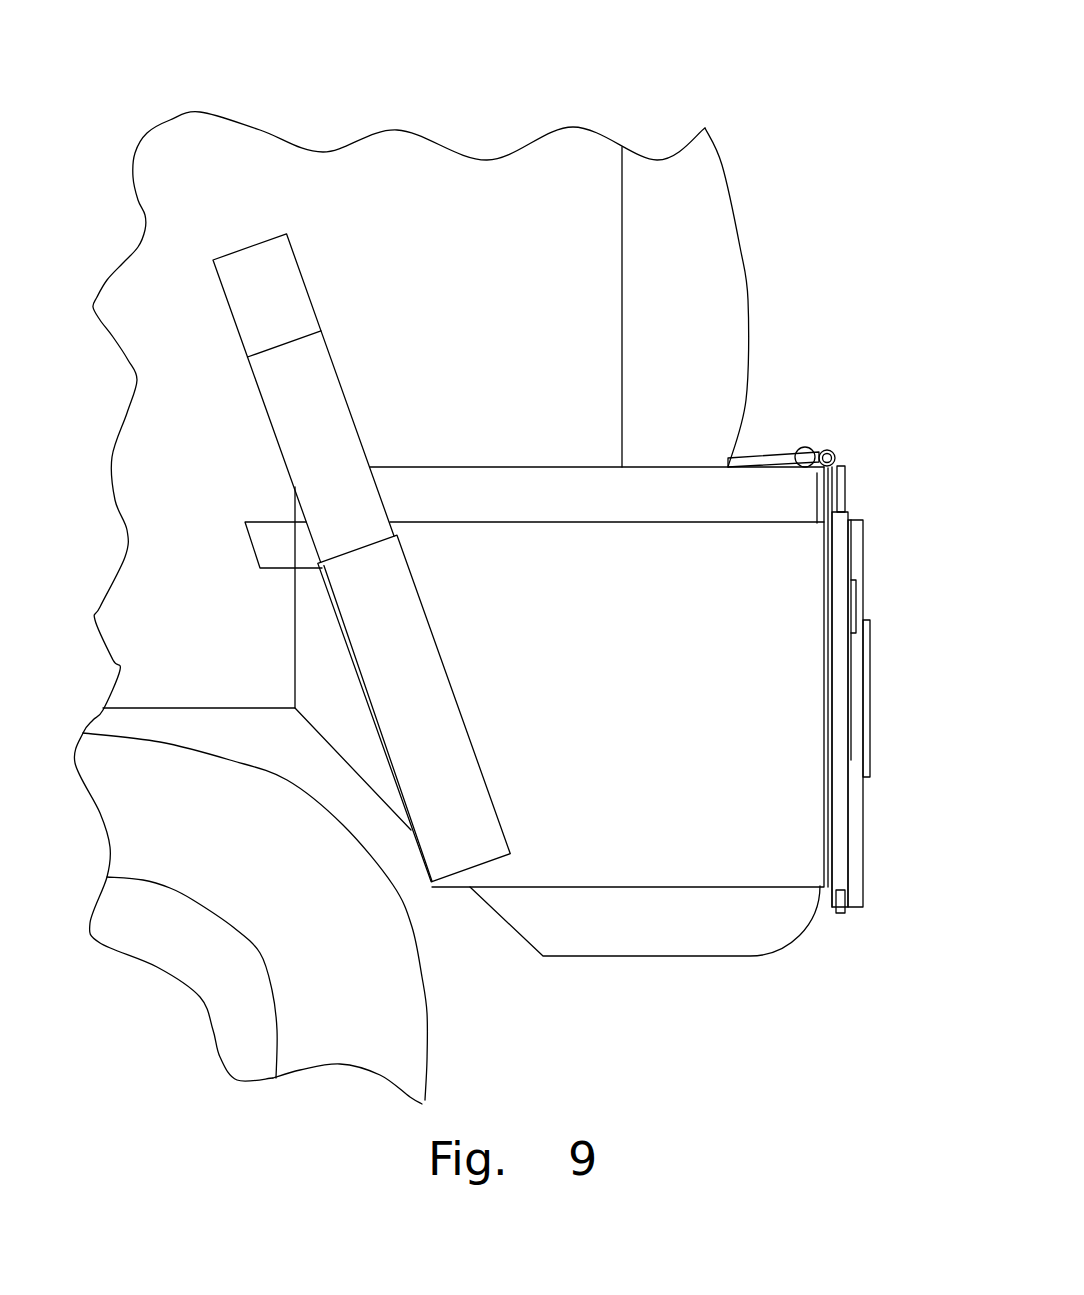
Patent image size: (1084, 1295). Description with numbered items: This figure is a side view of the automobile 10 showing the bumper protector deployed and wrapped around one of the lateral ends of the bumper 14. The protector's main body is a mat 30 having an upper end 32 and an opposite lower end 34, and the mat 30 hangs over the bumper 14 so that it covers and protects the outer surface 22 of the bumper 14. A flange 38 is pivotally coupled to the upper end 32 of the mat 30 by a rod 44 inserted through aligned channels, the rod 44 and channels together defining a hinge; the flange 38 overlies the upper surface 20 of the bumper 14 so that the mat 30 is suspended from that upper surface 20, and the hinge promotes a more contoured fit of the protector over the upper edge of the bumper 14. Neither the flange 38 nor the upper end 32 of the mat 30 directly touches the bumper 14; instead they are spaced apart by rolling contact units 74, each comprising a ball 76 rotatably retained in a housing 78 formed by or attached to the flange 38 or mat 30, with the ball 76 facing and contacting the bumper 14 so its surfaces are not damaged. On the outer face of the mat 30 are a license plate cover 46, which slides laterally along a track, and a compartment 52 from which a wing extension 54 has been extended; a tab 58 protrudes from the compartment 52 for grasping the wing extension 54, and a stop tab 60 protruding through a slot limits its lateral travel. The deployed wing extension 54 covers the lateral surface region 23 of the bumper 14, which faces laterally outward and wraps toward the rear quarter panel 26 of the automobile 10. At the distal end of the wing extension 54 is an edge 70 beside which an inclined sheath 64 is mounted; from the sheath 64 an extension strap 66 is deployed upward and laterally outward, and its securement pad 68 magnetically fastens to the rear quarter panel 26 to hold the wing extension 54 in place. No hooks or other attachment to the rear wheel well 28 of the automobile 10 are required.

The automobile 10 is at (292, 64).
The bumper 14 is at (728, 946).
The upper surface of the bumper 20 is at (578, 460).
The outer surface of the bumper 22 is at (838, 600).
The lateral surface regions of the bumper 23 is at (505, 487).
The rear quarter panels 26 is at (446, 187).
The rear wheel wells 28 is at (330, 750).
The mat 30 is at (832, 723).
The upper end of the mat 32 is at (840, 470).
The lower end of the mat 34 is at (834, 905).
The flange 38 is at (748, 458).
The rod 44 is at (835, 456).
The license plate cover 46 is at (870, 655).
The compartment 52 is at (860, 838).
The wing extension 54 is at (617, 848).
The tab 58 is at (262, 535).
The stop tab 60 is at (840, 912).
The sheath 64 is at (405, 610).
The extension strap 66 is at (330, 418).
The securement pad 68 is at (300, 298).
The edge 70 is at (330, 648).
The rolling contact unit 74 is at (813, 444).
The ball 76 is at (810, 470).
The housing 78 is at (800, 447).